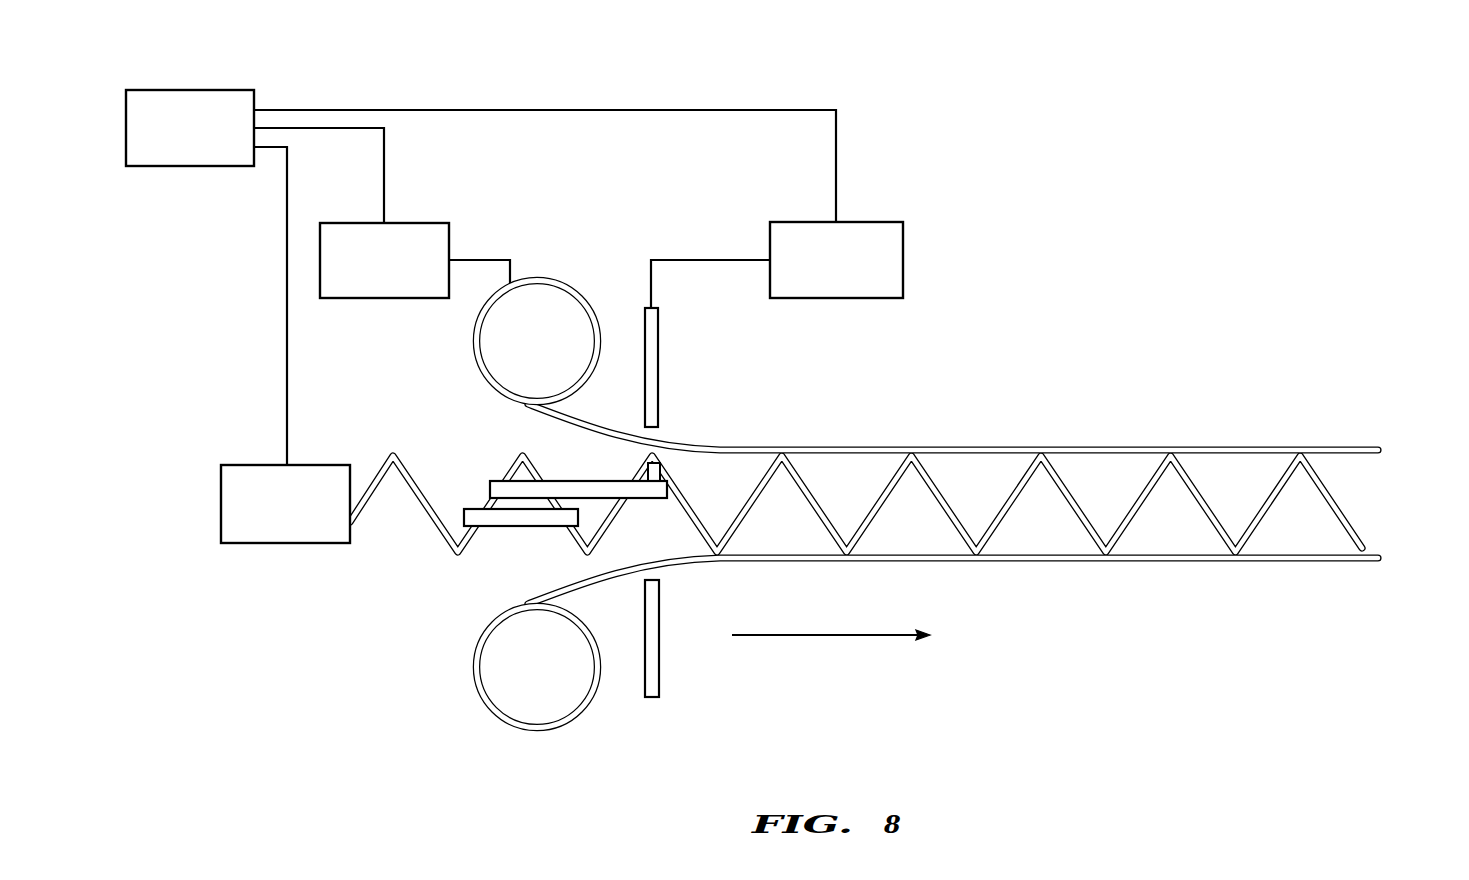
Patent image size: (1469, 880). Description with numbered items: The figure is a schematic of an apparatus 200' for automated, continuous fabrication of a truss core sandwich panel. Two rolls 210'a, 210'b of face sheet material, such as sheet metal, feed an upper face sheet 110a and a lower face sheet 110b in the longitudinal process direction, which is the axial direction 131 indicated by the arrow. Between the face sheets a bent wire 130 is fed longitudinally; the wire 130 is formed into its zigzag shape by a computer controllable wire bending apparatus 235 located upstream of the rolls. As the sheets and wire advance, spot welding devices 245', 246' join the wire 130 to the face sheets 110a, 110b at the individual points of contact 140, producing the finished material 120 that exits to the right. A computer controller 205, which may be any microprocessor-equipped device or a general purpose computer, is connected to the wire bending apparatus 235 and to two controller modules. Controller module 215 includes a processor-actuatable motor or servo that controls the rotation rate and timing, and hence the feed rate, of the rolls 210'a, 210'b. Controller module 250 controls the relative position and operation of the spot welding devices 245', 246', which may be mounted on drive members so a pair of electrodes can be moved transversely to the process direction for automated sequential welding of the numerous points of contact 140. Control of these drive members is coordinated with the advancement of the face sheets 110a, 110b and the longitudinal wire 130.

The computer controller 205 is at (237, 92).
The controller module 215 is at (430, 226).
The controller module 250 is at (882, 226).
The apparatus 200' is at (545, 287).
The roll of sheet material 210'a is at (483, 341).
The roll of sheet material 210'b is at (483, 667).
The wire bending apparatus 235 is at (332, 470).
The spot welding device 245' is at (556, 454).
The spot welding device 246' is at (511, 551).
The face sheet 110a is at (1205, 446).
The face sheet 110b is at (1057, 561).
The finished material 120 is at (1365, 495).
The wire 130 is at (1133, 510).
The points of contact 140 is at (976, 553).
The axial direction 131 is at (740, 637).